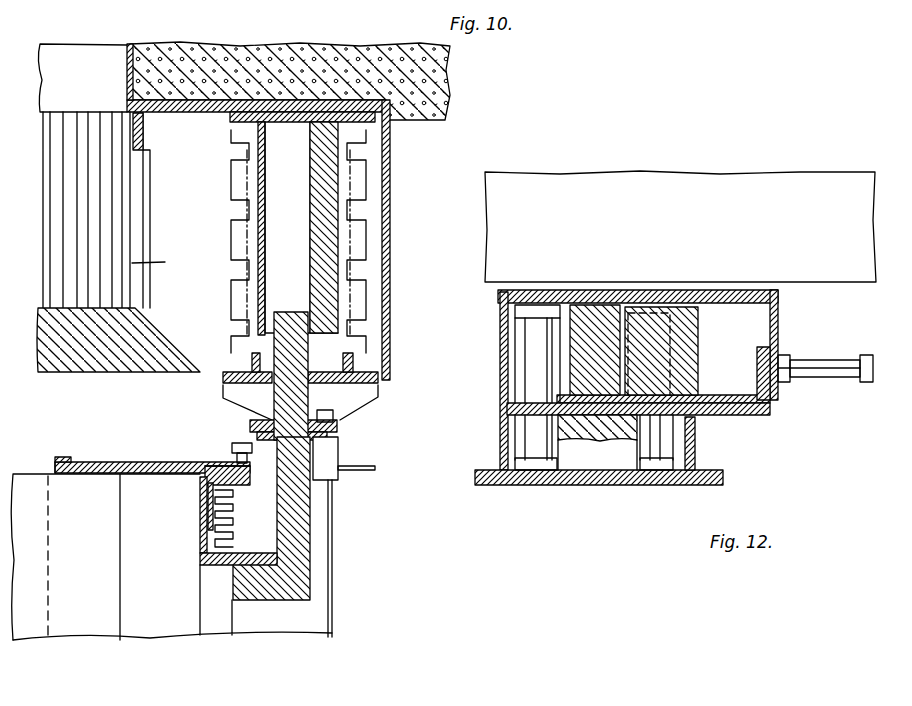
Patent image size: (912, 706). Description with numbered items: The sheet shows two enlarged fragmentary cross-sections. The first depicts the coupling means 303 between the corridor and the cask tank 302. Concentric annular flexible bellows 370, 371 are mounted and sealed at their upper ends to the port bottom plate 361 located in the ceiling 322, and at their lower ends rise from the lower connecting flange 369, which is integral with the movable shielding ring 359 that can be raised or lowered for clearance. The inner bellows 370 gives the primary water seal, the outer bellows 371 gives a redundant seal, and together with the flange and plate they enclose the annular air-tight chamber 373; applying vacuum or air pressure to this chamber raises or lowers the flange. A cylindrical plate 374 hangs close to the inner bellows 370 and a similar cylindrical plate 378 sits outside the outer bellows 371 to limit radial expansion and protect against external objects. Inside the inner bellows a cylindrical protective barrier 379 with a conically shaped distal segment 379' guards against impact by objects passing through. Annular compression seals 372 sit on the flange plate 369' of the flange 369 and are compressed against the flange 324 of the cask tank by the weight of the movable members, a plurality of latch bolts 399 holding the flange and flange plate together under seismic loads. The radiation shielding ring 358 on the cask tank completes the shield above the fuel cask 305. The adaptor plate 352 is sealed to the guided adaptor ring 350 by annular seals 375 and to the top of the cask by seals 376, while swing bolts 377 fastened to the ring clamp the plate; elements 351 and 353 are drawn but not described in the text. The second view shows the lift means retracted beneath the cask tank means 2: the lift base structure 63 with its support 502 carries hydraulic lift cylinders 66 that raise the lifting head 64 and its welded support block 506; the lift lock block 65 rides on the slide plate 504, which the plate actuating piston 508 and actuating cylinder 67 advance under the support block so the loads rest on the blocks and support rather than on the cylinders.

In FIG. 10, the port bottom plate 361 is at (215, 98).
In FIG. 10, the ceiling 322 is at (430, 122).
In FIG. 10, the inner flexible bellows 370 is at (214, 241).
In FIG. 10, the cylindrical plate 374 is at (124, 210).
In FIG. 10, the protective barrier 379 is at (171, 265).
In FIG. 10, the conically shaped distal segment 379' is at (126, 329).
In FIG. 10, the outer flexible bellows 371 is at (390, 205).
In FIG. 10, the cylindrical plate 378 is at (393, 238).
In FIG. 10, the annular air-tight chamber 373 is at (300, 284).
In FIG. 10, the coupling means 303 is at (364, 227).
In FIG. 10, the movable shielding ring 359 is at (290, 345).
In FIG. 10, the lower connecting flange 369 is at (335, 402).
In FIG. 10, the flange plate 369' is at (353, 425).
In FIG. 10, the flange 324 is at (342, 446).
In FIG. 10, the latch bolts 399 is at (380, 470).
In FIG. 10, the guided adaptor ring 350 is at (250, 480).
In FIG. 10, the radiation shielding ring 358 is at (310, 556).
In FIG. 10, the cask tank 302 is at (240, 617).
In FIG. 10, the fuel cask 305 is at (124, 606).
In FIG. 10, the spring 353 is at (200, 537).
In FIG. 10, the side plate 351 is at (200, 490).
In FIG. 10, the adaptor plate 352 is at (95, 445).
In FIG. 10, the annular seals 375 is at (220, 462).
In FIG. 10, the seals 376 is at (75, 458).
In FIG. 10, the swing bolts 377 is at (232, 462).
In FIG. 10, the annular compression seals 372 is at (270, 400).
In FIG. 12, the cask tank means 2 is at (680, 226).
In FIG. 12, the support block 506 is at (593, 317).
In FIG. 12, the lifting head 64 is at (780, 295).
In FIG. 12, the lift lock block 65 is at (697, 343).
In FIG. 12, the hydraulic lift cylinders 66 is at (657, 443).
In FIG. 12, the lift base structure 63 is at (500, 422).
In FIG. 12, the slide plate 504 is at (757, 418).
In FIG. 12, the actuating cylinder 67 is at (827, 380).
In FIG. 12, the plate actuating piston 508 is at (780, 341).
In FIG. 12, the support 502 is at (600, 453).